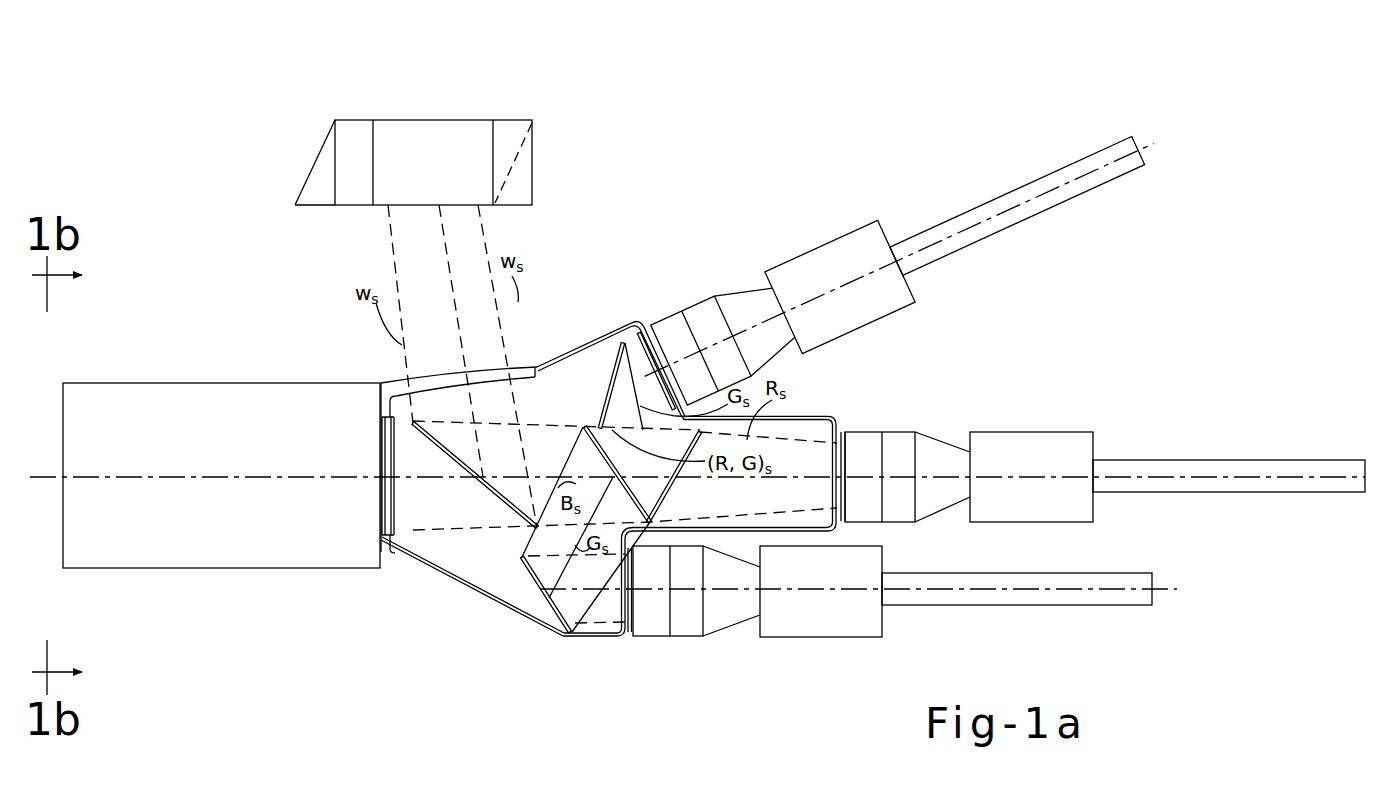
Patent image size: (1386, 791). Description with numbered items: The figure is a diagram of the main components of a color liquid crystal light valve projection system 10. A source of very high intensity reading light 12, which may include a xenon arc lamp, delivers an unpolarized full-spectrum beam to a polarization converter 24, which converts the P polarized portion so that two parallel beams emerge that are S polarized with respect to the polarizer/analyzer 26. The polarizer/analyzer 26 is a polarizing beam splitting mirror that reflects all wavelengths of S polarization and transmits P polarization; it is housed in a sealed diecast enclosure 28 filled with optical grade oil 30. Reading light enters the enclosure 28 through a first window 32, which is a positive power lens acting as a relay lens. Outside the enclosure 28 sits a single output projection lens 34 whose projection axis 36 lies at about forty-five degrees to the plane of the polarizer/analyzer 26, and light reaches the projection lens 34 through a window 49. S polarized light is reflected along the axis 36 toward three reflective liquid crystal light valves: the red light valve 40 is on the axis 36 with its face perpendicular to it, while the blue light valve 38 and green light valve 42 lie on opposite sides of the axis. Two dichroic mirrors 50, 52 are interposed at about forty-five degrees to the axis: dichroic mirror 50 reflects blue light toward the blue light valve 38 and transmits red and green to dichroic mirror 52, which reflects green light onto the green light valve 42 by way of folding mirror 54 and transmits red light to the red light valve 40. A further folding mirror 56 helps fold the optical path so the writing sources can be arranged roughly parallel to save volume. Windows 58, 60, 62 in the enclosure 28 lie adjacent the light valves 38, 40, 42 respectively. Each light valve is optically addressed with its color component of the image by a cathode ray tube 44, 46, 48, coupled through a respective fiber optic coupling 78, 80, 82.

The color liquid crystal light valve projection system 10 is at (644, 192).
The source of reading light 12 is at (438, 120).
The polarization converter 24 is at (318, 151).
The polarizer/analyzer 26 is at (482, 497).
The enclosure 28 is at (455, 596).
The optical grade oil 30 is at (438, 556).
The first window 32 is at (394, 372).
The output projection lens 34 is at (117, 383).
The output projection axis 36 is at (178, 475).
The blue liquid crystal light valve 38 is at (635, 638).
The red liquid crystal light valve 40 is at (850, 418).
The green liquid crystal light valve 42 is at (646, 318).
The cathode ray tube 44 is at (848, 638).
The cathode ray tube 46 is at (1068, 432).
The cathode ray tube 48 is at (840, 238).
The window 49 is at (378, 517).
The dichroic mirror 50 is at (594, 463).
The dichroic mirror 52 is at (676, 493).
The folding mirror 54 is at (600, 388).
The folding mirror 56 is at (544, 605).
The window 58 is at (615, 603).
The window 60 is at (826, 455).
The window 62 is at (656, 379).
The fiber optic coupling 78 is at (652, 637).
The fiber optic coupling 80 is at (866, 432).
The fiber optic coupling 82 is at (692, 300).